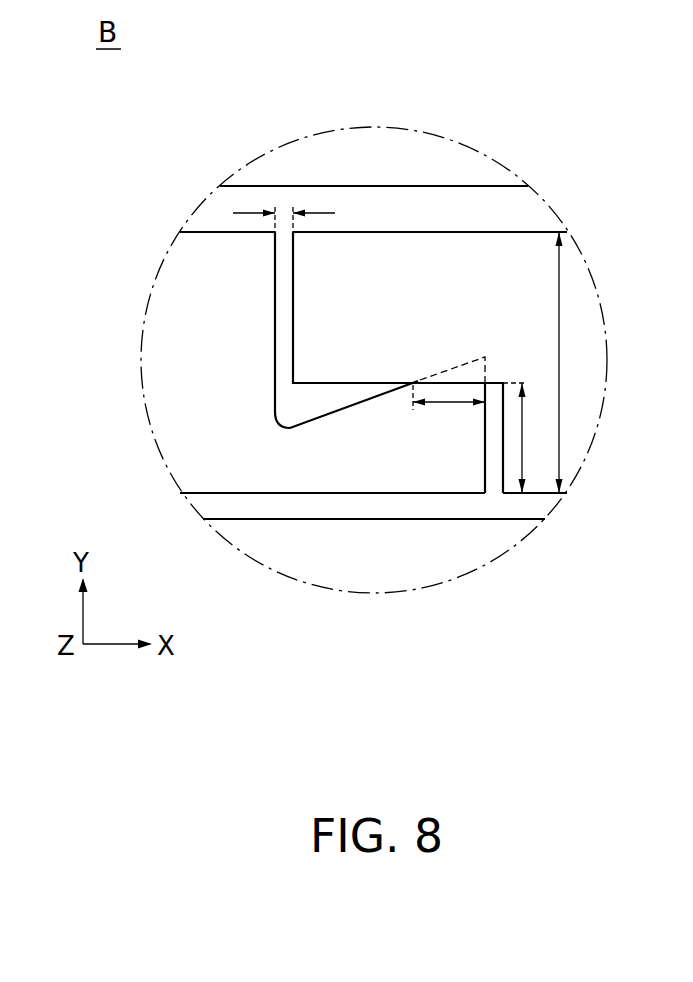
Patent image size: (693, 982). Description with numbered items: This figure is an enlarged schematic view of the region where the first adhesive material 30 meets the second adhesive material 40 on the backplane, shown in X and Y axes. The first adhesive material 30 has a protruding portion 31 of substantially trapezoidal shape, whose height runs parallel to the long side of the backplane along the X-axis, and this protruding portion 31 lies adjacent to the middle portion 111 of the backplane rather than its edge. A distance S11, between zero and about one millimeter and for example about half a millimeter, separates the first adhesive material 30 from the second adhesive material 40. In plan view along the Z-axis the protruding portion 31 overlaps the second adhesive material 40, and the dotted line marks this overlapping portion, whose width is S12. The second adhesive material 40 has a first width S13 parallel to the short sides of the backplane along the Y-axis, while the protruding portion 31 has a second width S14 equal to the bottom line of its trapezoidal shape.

The first adhesive material 30 is at (158, 365).
The protruding portion 31 is at (435, 412).
The second adhesive material 40 is at (575, 284).
The middle portion 111 is at (258, 540).
The distance S11 is at (286, 213).
The width S12 is at (448, 403).
The first width S13 is at (559, 366).
The second width S14 is at (522, 438).